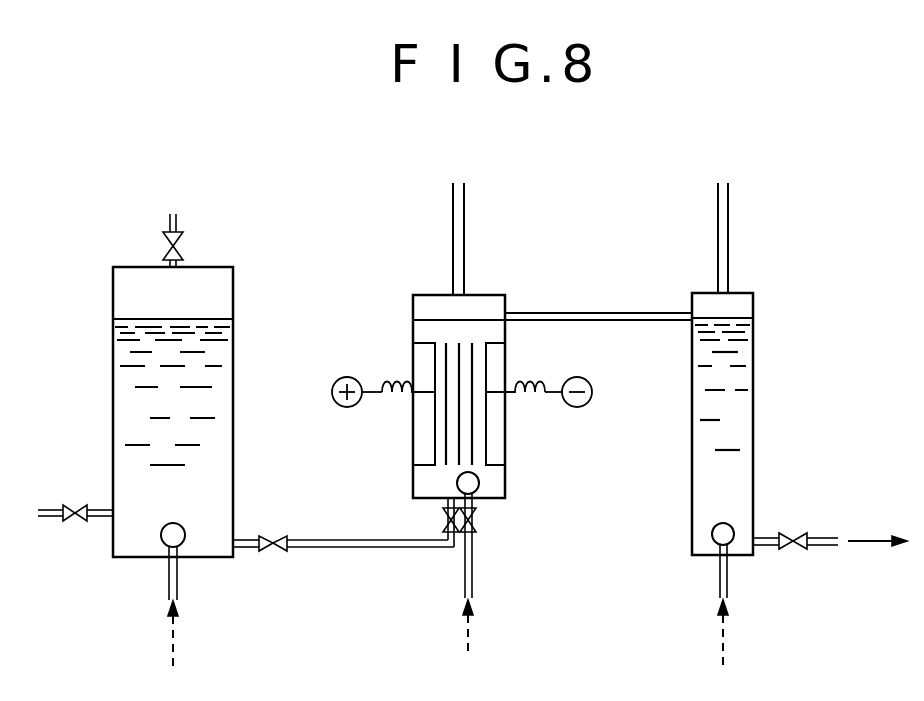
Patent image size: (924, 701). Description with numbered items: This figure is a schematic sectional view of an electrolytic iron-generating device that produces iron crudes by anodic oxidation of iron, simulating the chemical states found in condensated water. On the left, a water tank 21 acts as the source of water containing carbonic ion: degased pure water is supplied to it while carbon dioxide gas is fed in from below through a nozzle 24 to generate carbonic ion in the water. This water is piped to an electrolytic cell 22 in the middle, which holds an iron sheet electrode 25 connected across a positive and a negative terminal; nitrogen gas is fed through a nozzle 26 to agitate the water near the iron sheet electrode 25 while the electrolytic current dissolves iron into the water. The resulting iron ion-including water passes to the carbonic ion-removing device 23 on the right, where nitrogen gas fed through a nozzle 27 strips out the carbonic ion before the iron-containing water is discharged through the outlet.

The water tank 21 is at (222, 266).
The electrolytic cell 22 is at (497, 294).
The carbonic ion-removing device 23 is at (742, 292).
The nozzle 24 is at (182, 546).
The iron sheet electrode 25 is at (473, 437).
The nozzle 26 is at (478, 490).
The nozzle 27 is at (731, 545).